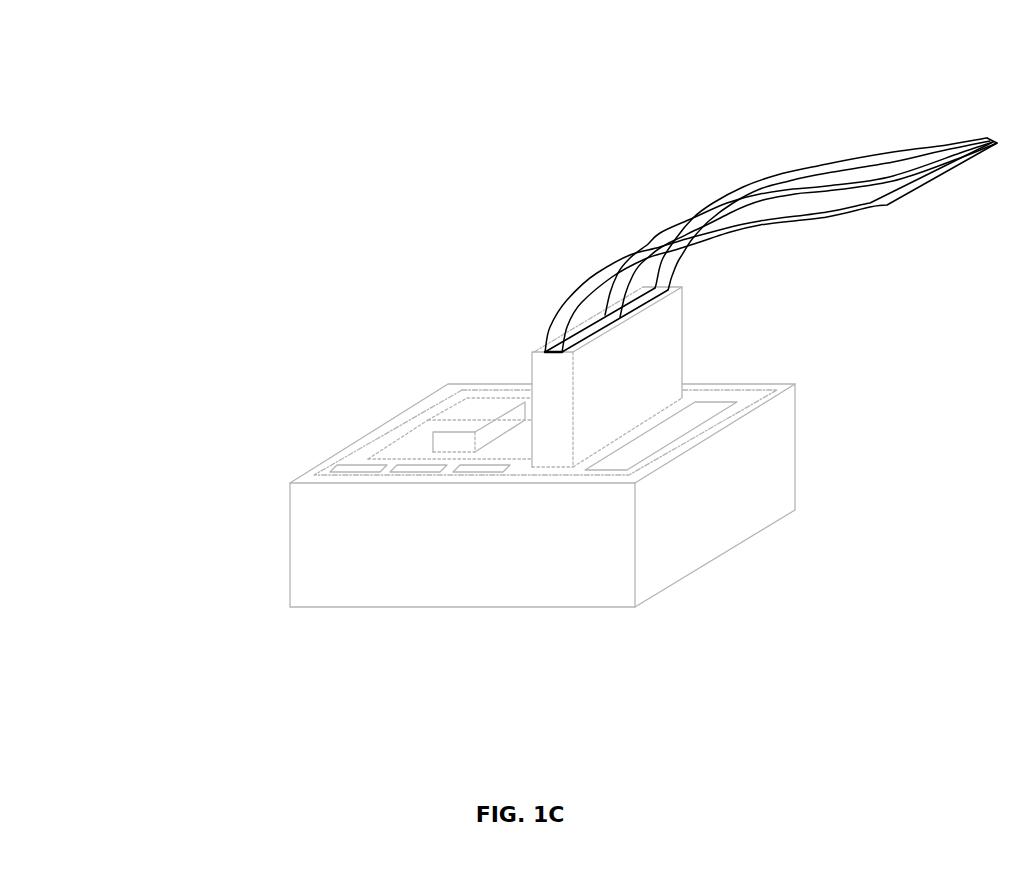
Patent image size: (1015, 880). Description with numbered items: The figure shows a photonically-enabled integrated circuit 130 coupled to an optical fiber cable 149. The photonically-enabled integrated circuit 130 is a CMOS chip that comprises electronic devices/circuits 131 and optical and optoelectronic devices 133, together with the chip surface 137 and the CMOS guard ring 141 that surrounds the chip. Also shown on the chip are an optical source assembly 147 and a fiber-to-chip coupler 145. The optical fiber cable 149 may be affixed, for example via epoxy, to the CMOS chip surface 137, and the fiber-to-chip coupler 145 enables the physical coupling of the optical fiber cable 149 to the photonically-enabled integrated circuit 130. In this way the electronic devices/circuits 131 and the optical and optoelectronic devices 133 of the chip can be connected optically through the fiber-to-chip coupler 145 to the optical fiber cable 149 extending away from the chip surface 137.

The photonically-enabled integrated circuit 130 is at (151, 86).
The electronic devices/circuits 131 is at (472, 473).
The optical and optoelectronic devices 133 is at (426, 456).
The chip surface 137 is at (410, 432).
The CMOS guard ring 141 is at (783, 387).
The fiber-to-chip coupler 145 is at (646, 388).
The optical source assembly 147 is at (488, 410).
The optical fiber cable 149 is at (823, 164).